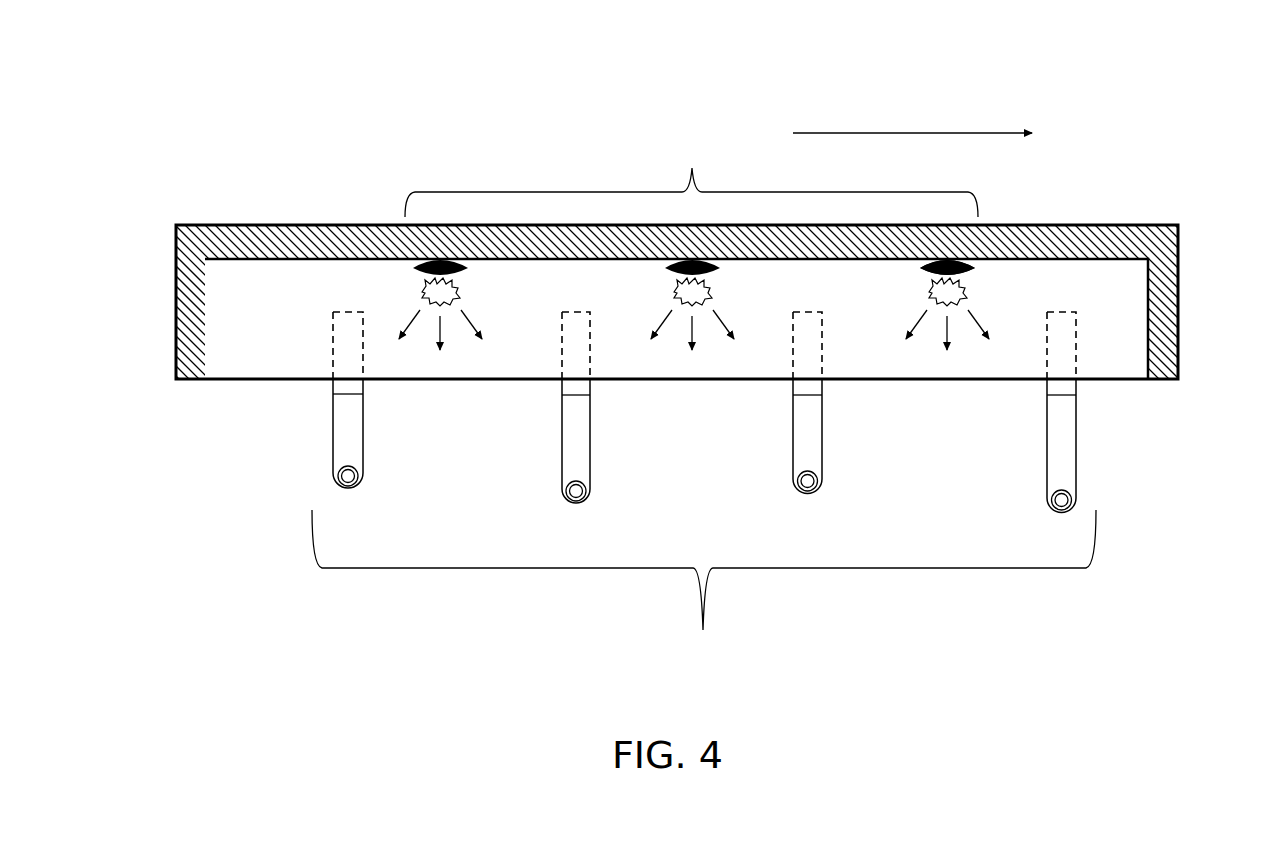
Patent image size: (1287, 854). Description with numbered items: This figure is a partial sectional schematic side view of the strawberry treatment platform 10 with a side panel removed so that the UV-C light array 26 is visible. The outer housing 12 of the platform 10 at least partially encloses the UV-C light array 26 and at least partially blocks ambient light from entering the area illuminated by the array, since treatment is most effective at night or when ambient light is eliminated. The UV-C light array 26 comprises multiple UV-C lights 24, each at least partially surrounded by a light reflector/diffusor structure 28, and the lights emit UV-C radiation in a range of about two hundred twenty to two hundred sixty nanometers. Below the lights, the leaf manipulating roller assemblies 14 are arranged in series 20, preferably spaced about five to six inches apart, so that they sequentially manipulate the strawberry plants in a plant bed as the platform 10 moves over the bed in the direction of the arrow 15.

The strawberry treatment platform 10 is at (110, 205).
The outer housing 12 is at (173, 357).
The roller assembly 14 is at (336, 452).
The arrow 15 is at (912, 116).
The series 20 is at (704, 590).
The UV-C light 24 is at (425, 290).
The UV-C light array 26 is at (691, 176).
The light reflector/diffusor structure 28 is at (978, 270).